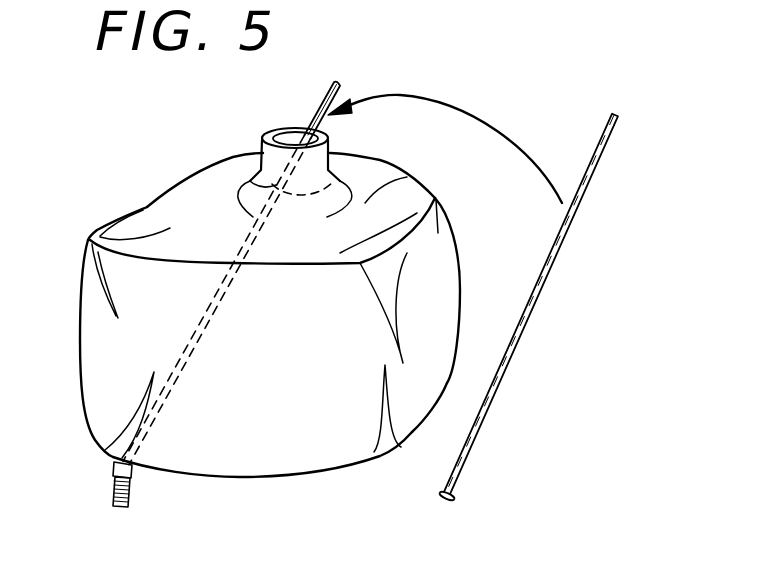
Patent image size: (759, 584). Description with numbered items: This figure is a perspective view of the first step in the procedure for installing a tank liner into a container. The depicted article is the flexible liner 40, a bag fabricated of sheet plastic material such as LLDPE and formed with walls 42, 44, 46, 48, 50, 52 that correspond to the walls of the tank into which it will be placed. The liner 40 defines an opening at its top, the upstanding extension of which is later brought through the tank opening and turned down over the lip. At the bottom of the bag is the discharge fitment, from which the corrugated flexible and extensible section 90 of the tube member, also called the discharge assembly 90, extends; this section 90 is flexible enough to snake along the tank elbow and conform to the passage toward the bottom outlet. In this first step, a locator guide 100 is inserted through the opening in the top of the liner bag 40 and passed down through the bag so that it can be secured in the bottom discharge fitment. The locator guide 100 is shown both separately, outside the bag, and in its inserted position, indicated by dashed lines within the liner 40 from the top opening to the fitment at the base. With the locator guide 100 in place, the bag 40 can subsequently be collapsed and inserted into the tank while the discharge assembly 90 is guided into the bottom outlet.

The flexible liner 40 is at (261, 350).
The liner wall 42 is at (240, 478).
The liner wall 44 is at (147, 207).
The liner wall 46 is at (433, 290).
The liner wall 48 is at (240, 188).
The liner wall 50 is at (378, 160).
The liner wall 52 is at (167, 327).
The corrugated flexible section 90 is at (130, 487).
The locator guide 100 is at (197, 337).